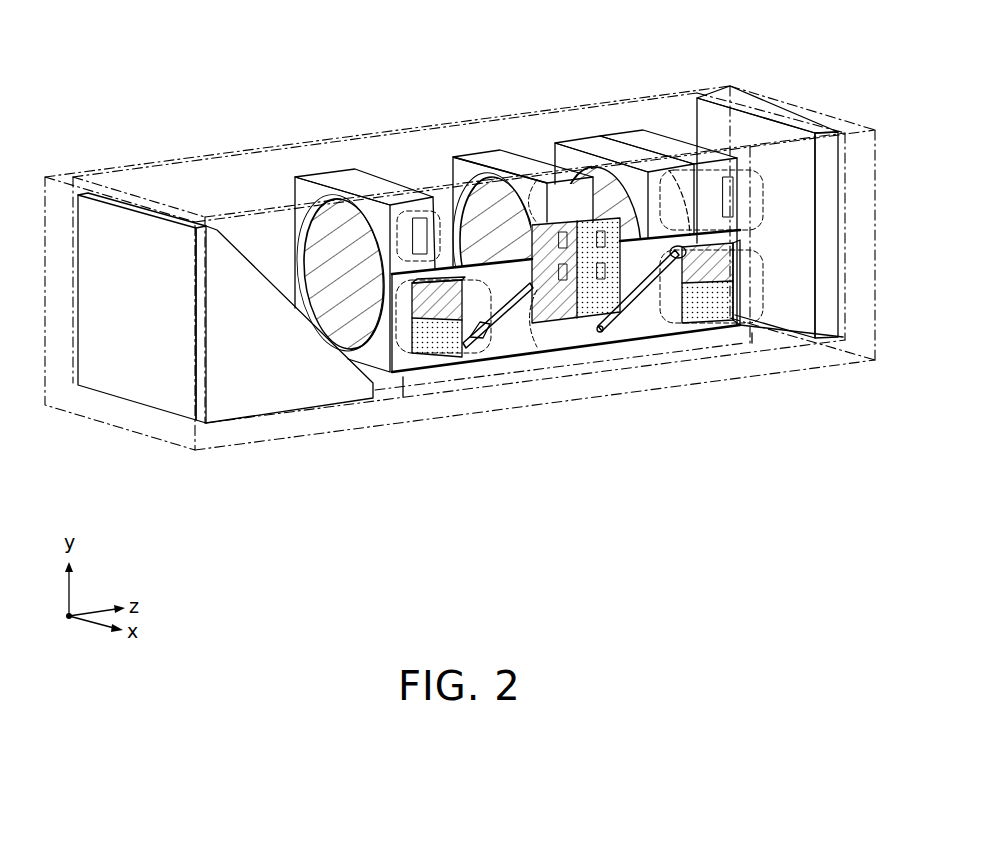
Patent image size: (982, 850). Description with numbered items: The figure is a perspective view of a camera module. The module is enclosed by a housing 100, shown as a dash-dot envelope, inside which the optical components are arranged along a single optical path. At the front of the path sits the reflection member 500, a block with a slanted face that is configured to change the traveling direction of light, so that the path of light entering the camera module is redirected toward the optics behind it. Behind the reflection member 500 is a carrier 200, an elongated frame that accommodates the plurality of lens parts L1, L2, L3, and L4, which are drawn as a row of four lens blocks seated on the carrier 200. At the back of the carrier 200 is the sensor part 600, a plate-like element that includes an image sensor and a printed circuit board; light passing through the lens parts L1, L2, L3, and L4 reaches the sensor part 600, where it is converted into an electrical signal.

The housing 100 is at (80, 405).
The carrier 200 is at (325, 155).
The reflection member 500 is at (163, 362).
The sensor part 600 is at (803, 163).
The first lens part L1 is at (362, 187).
The second lens part L2 is at (488, 155).
The third lens part L3 is at (593, 142).
The fourth lens part L4 is at (636, 133).